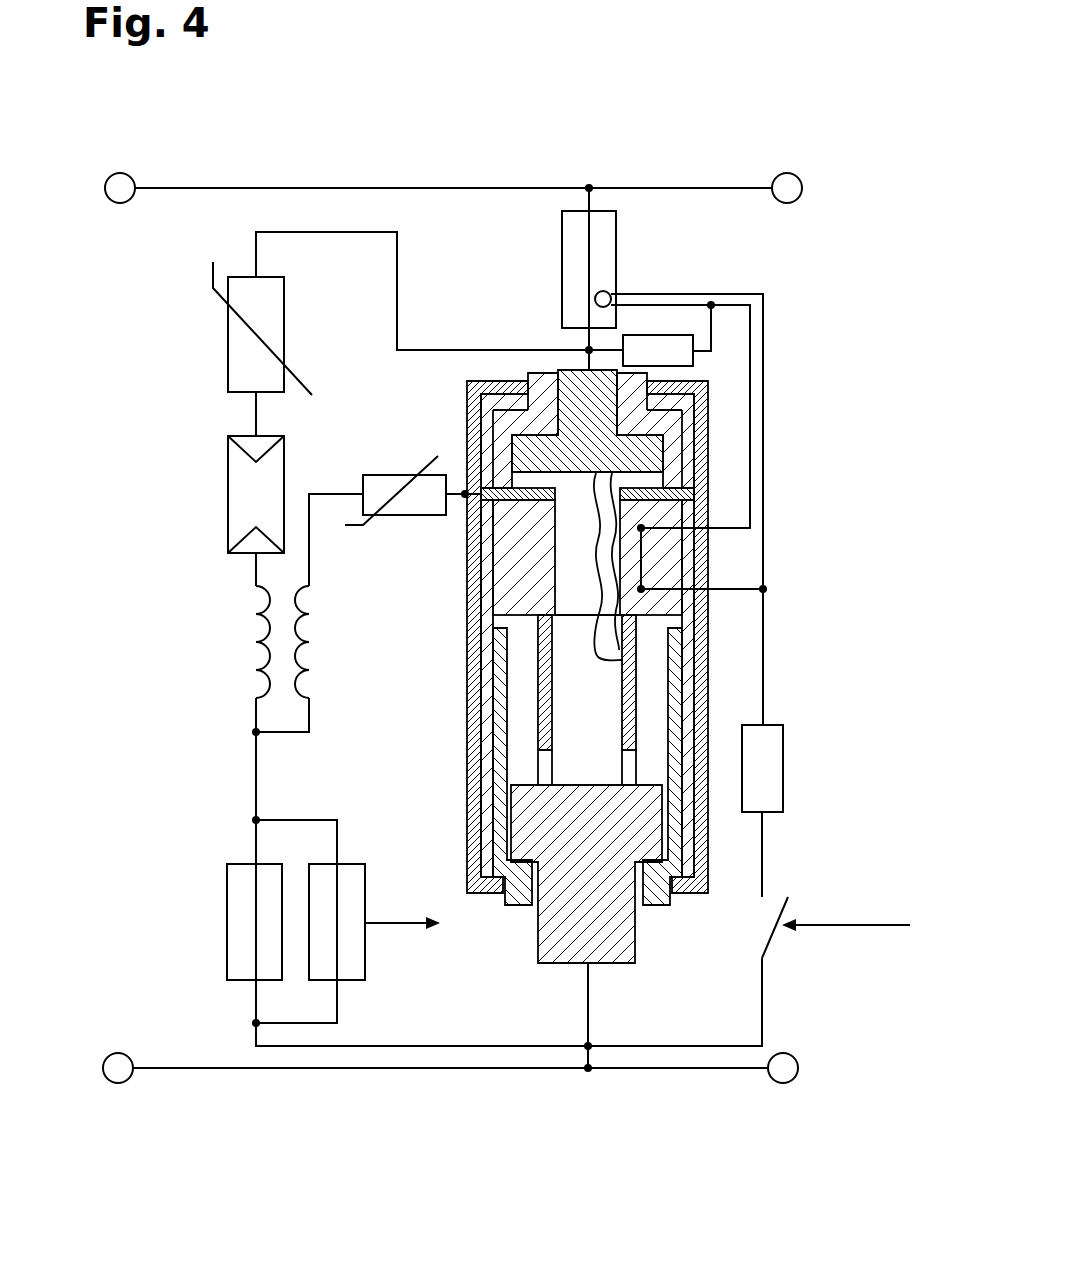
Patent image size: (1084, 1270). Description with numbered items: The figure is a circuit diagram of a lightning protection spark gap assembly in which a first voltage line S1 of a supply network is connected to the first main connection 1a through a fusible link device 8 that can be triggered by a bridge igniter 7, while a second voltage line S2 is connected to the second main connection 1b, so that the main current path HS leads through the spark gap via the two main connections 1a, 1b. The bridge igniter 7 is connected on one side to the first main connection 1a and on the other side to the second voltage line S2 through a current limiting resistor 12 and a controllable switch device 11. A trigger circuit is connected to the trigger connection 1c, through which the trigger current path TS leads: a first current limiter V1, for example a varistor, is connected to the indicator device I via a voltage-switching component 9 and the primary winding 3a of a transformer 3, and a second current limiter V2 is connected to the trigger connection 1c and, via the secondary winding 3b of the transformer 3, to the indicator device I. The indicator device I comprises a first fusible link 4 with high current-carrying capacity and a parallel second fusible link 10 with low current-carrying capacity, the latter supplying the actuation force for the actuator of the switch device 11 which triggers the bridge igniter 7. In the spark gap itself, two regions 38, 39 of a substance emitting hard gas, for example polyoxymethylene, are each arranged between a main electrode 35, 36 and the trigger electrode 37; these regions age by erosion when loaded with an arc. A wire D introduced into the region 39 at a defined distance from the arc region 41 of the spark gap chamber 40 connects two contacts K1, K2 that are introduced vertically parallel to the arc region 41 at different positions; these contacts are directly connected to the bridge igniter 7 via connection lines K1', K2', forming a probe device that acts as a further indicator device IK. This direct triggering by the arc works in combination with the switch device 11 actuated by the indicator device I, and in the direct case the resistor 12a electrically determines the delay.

The first voltage line S1 is at (349, 187).
The second voltage line S2 is at (526, 1070).
The fusible link device 8 is at (562, 265).
The bridge igniter 7 is at (609, 293).
The first current limiter V1 is at (285, 330).
The second current limiter V2 is at (390, 475).
The first main connection 1a is at (587, 349).
The second main connection 1b is at (588, 1045).
The trigger connection 1c is at (465, 492).
The resistor 12a is at (693, 360).
The current limiting resistor 12 is at (783, 772).
The main electrode 35 is at (655, 457).
The region with substance emitting hard gas 38 is at (654, 478).
The trigger electrode 37 is at (640, 500).
The contact K1 is at (746, 554).
The connection line K1' is at (758, 534).
The further indicator device IK is at (775, 563).
The wire D is at (733, 590).
The connection line K2' is at (758, 596).
The contact K2 is at (733, 568).
The region with substance emitting hard gas 39 is at (640, 606).
The main electrode 36 is at (634, 700).
The voltage-switching component 9 is at (228, 498).
The spark gap chamber 40 is at (530, 541).
The arc region 41 is at (530, 567).
The transformer 3 is at (274, 668).
The primary winding 3a is at (266, 600).
The secondary winding 3b is at (300, 600).
The trigger current path TS is at (254, 800).
The first fusible link 4 is at (227, 900).
The second fusible link 10 is at (366, 963).
The indicator device I is at (208, 953).
The switch device 11 is at (777, 938).
The main current path HS is at (587, 1012).